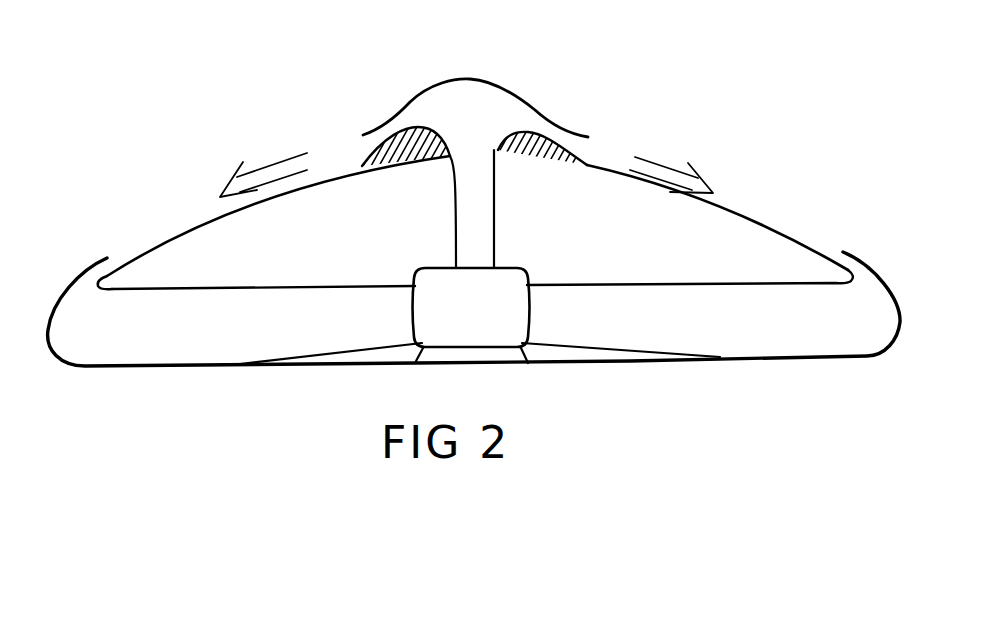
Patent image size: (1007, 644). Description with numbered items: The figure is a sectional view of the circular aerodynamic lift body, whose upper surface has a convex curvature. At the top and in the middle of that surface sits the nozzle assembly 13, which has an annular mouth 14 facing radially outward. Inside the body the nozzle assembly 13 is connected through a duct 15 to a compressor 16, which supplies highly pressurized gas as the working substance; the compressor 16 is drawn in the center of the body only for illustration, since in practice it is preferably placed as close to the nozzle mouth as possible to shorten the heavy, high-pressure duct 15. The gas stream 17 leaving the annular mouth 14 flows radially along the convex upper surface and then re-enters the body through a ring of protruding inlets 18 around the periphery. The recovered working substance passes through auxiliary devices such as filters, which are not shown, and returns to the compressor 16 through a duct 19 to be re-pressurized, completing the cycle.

The nozzle assembly 13 is at (397, 118).
The annular mouth 14 is at (587, 152).
The duct 15 is at (475, 209).
The compressor 16 is at (471, 315).
The gas stream 17 is at (466, 163).
The protruding inlets 18 is at (108, 267).
The duct 19 is at (474, 309).